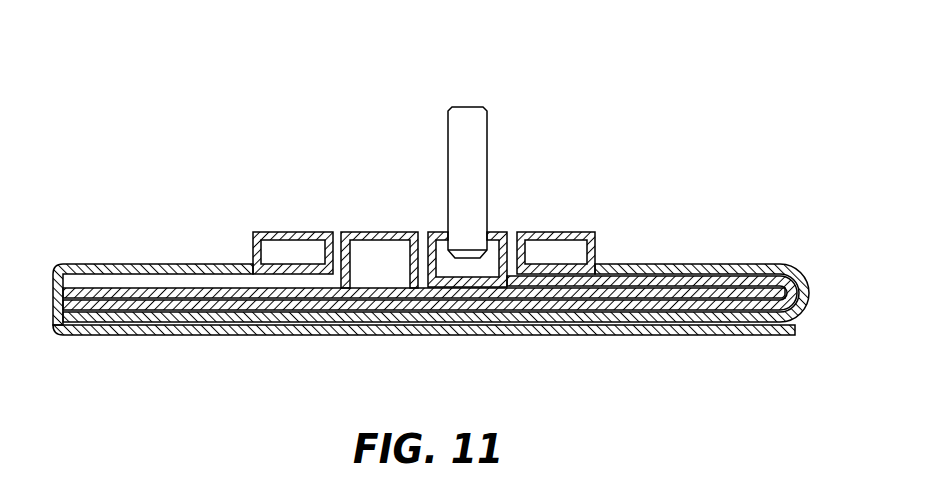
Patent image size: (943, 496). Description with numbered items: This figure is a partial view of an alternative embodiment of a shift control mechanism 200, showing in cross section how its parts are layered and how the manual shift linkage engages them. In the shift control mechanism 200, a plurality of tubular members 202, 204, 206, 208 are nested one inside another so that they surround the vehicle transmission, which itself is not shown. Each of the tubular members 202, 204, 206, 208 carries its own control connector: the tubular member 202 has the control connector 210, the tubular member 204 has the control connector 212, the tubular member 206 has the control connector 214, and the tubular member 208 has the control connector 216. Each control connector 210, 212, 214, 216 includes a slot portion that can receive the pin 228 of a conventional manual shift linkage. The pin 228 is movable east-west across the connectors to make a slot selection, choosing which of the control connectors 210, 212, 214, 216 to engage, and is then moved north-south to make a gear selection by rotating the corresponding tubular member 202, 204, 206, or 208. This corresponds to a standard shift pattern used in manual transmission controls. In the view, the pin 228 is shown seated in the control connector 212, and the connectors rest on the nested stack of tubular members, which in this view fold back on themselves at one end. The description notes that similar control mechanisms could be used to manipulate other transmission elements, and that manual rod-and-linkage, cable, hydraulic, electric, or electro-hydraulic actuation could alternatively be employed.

The shift control mechanism 200 is at (183, 108).
The tubular member 202 is at (145, 290).
The tubular member 204 is at (768, 280).
The tubular member 206 is at (809, 297).
The tubular member 208 is at (512, 326).
The control connector 210 is at (379, 232).
The control connector 212 is at (478, 153).
The control connector 214 is at (552, 232).
The control connector 216 is at (291, 232).
The pin 228 is at (468, 118).